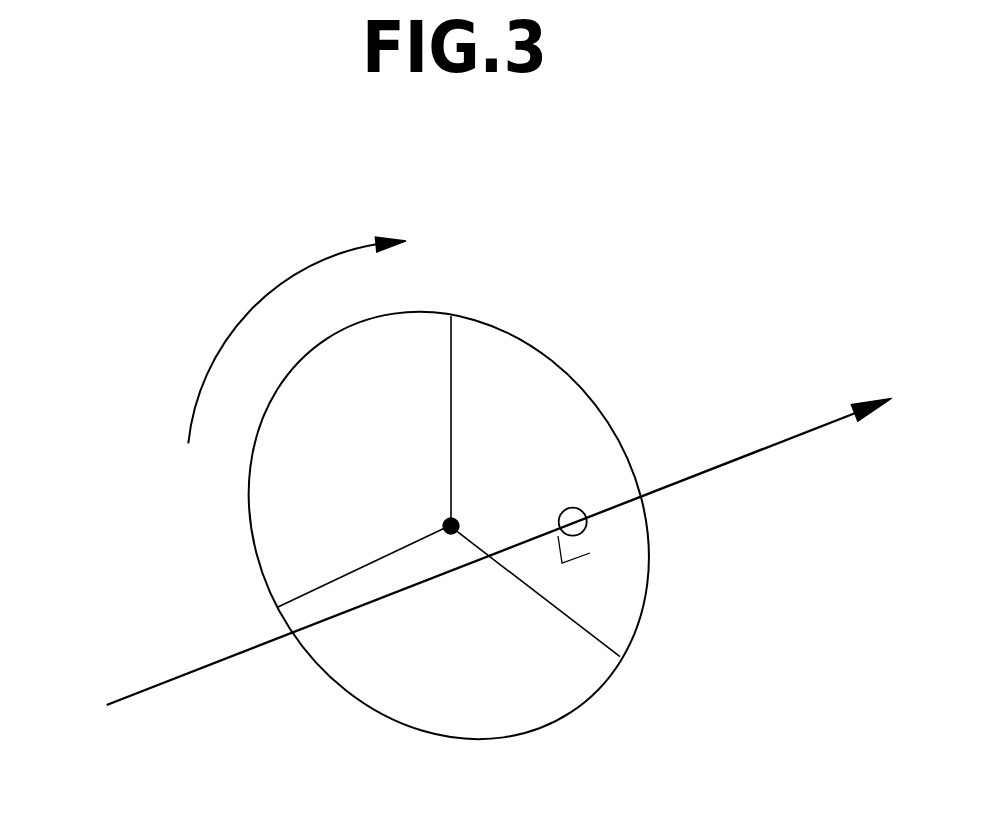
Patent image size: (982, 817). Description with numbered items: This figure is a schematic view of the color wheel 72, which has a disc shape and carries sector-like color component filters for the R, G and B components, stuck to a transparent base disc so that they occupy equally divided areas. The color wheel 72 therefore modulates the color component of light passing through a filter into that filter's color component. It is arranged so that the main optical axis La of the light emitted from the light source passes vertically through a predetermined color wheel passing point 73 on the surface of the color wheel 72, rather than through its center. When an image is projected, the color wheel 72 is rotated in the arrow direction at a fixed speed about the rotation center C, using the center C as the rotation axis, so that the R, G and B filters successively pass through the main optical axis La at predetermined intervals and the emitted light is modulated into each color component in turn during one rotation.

The color wheel 72 is at (645, 600).
The color wheel passing point 73 is at (577, 507).
The rotation center C is at (452, 526).
The main optical axis La is at (472, 565).